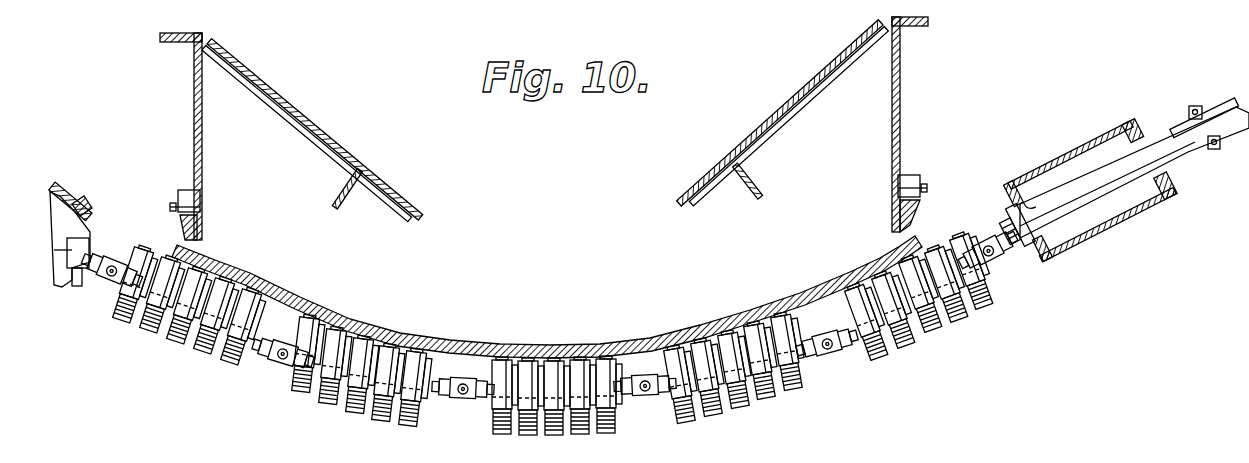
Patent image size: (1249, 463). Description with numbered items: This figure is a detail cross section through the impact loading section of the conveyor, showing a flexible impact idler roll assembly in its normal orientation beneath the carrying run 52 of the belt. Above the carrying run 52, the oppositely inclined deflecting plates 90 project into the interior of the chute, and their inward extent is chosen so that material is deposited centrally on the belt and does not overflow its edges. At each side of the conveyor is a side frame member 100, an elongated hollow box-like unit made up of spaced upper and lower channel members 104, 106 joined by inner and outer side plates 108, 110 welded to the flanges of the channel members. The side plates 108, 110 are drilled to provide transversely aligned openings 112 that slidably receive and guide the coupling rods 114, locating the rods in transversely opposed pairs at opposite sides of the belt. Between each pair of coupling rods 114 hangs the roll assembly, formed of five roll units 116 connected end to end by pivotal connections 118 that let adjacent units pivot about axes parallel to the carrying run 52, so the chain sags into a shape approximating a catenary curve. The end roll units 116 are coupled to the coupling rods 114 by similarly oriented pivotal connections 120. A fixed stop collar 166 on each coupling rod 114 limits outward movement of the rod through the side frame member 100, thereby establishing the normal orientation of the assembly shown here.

The carrying run 52 is at (546, 334).
The deflecting plates 90 is at (315, 118).
The side frame members 100 is at (1117, 183).
The upper channel member 104 is at (72, 190).
The lower channel member 106 is at (1104, 217).
The inner side plate 108 is at (88, 208).
The outer side plate 110 is at (1140, 140).
The openings 112 is at (88, 227).
The coupling rods 114 is at (1100, 177).
The roll units 116 is at (180, 345).
The pivotal connections 118 is at (273, 367).
The pivotal connections 120 is at (108, 282).
The stop collar 166 is at (78, 275).